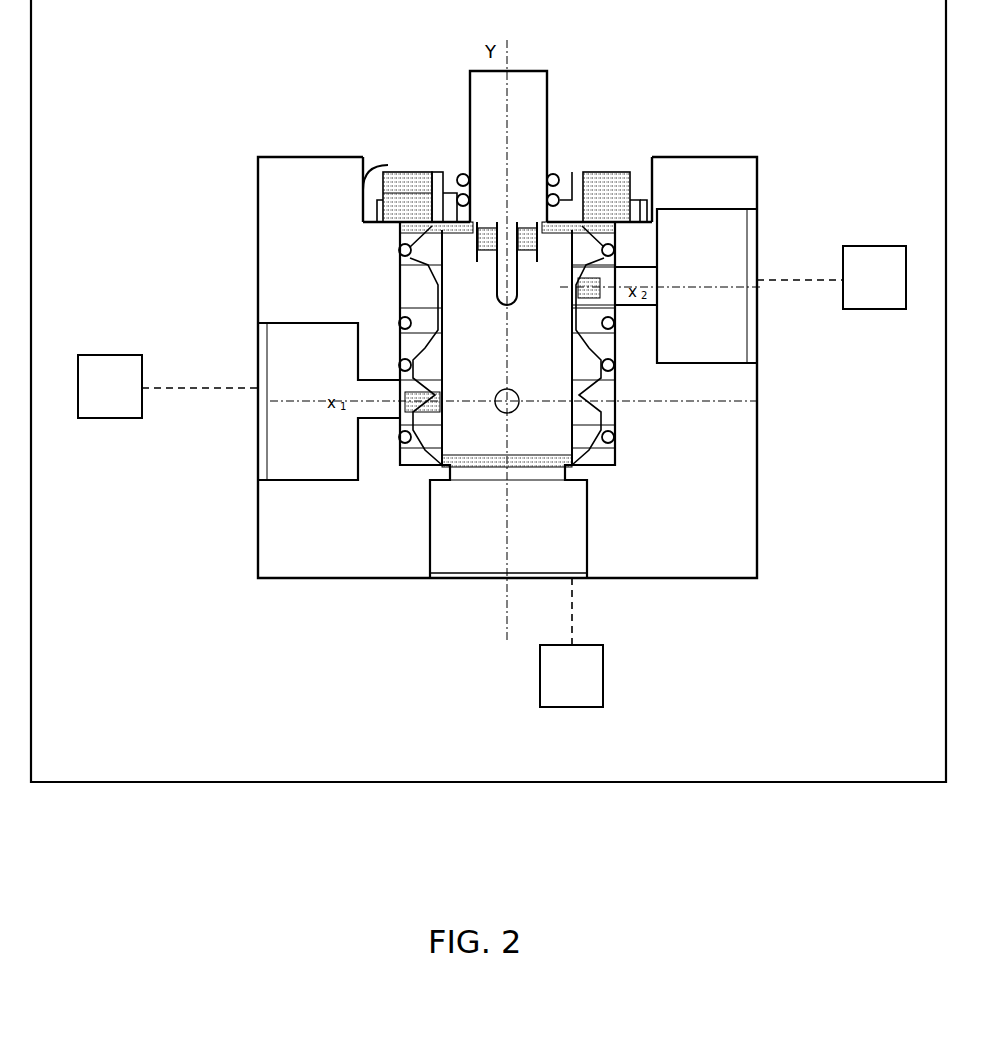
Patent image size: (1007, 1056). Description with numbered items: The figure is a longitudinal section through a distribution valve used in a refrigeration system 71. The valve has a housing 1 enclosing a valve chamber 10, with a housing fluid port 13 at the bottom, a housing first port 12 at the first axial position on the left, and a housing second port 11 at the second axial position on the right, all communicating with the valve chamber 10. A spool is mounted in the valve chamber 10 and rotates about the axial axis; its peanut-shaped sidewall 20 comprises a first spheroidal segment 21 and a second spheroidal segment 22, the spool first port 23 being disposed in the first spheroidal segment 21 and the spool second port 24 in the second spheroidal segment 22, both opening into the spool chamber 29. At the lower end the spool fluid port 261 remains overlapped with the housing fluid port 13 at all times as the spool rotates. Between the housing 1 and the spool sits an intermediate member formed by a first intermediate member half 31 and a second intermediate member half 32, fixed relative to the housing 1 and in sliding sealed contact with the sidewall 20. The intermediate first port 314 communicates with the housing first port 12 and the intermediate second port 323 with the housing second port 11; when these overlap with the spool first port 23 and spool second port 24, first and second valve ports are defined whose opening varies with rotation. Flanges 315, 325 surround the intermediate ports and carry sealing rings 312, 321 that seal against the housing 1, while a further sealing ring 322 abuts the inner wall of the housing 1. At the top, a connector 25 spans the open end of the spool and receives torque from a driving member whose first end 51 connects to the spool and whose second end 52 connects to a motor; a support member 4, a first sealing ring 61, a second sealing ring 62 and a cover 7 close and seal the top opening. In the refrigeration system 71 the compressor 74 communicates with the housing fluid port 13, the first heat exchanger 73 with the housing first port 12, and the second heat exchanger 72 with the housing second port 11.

The housing 1 is at (283, 224).
The support member 4 is at (400, 212).
The cover 7 is at (428, 200).
The valve chamber 10 is at (378, 184).
The housing second port 11 is at (645, 270).
The housing first port 12 is at (352, 380).
The housing fluid port 13 is at (515, 562).
The sidewall 20 is at (423, 282).
The first spheroidal segment 21 is at (398, 330).
The second spheroidal segment 22 is at (625, 254).
The spool first port 23 is at (400, 436).
The spool second port 24 is at (612, 306).
The connector 25 is at (505, 262).
The spool chamber 29 is at (506, 361).
The first intermediate member half 31 is at (392, 296).
The second intermediate member half 32 is at (617, 384).
The first end of driving member 51 is at (505, 262).
The second end of driving member 52 is at (510, 262).
The first sealing ring 61 is at (553, 178).
The second sealing ring 62 is at (458, 175).
The refrigeration system 71 is at (623, 783).
The second heat exchanger 72 is at (831, 277).
The first heat exchanger 73 is at (168, 386).
The compressor 74 is at (571, 642).
The spool fluid port 261 is at (477, 458).
The sealing ring 312 is at (405, 448).
The intermediate first port 314 is at (400, 405).
The flange 315 is at (400, 427).
The sealing ring 321 is at (611, 246).
The sealing ring 322 is at (617, 440).
The intermediate second port 323 is at (600, 292).
The flange 325 is at (618, 322).